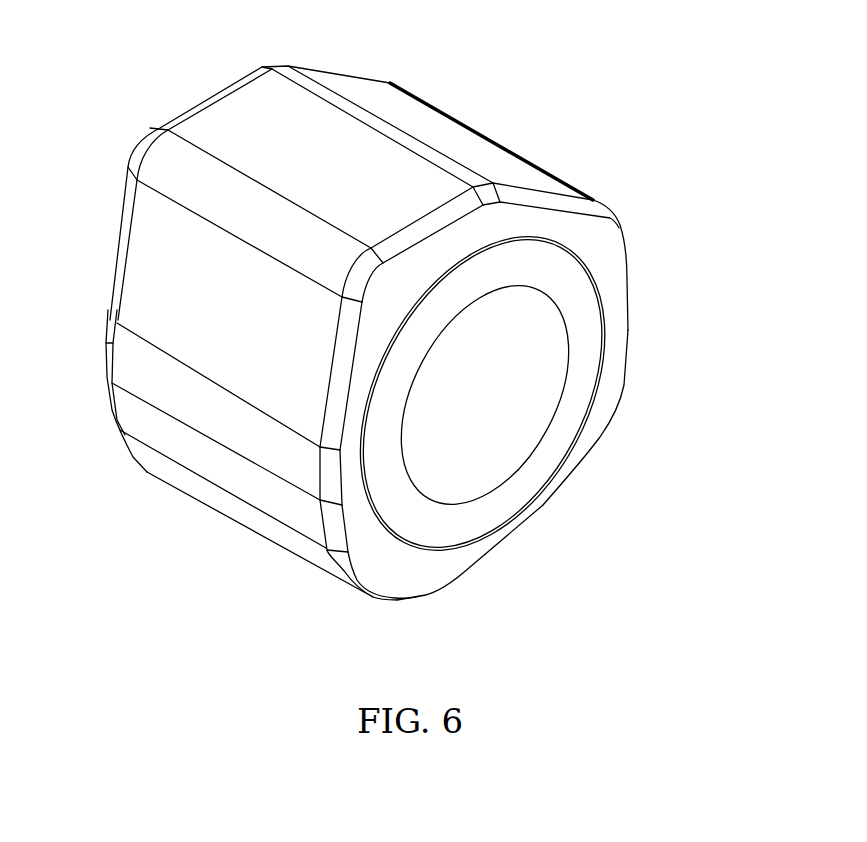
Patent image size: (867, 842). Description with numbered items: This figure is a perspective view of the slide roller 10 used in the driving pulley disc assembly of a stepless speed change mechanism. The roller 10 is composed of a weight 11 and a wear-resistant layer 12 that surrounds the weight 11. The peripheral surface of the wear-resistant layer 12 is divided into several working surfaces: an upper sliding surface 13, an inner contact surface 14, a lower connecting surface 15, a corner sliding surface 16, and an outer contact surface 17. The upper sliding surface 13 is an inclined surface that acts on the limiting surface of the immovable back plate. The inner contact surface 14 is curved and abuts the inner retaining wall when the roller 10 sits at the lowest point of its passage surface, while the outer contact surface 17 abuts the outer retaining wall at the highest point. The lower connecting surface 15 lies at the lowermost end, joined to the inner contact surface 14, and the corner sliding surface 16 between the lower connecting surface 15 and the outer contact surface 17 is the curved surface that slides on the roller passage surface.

The roller 10 is at (117, 117).
The weight 11 is at (580, 351).
The wear-resistant layer 12 is at (422, 572).
The upper sliding surface 13 is at (423, 137).
The inner contact surface 14 is at (203, 407).
The lower connecting surface 15 is at (543, 505).
The corner sliding surface 16 is at (607, 427).
The outer contact surface 17 is at (628, 290).